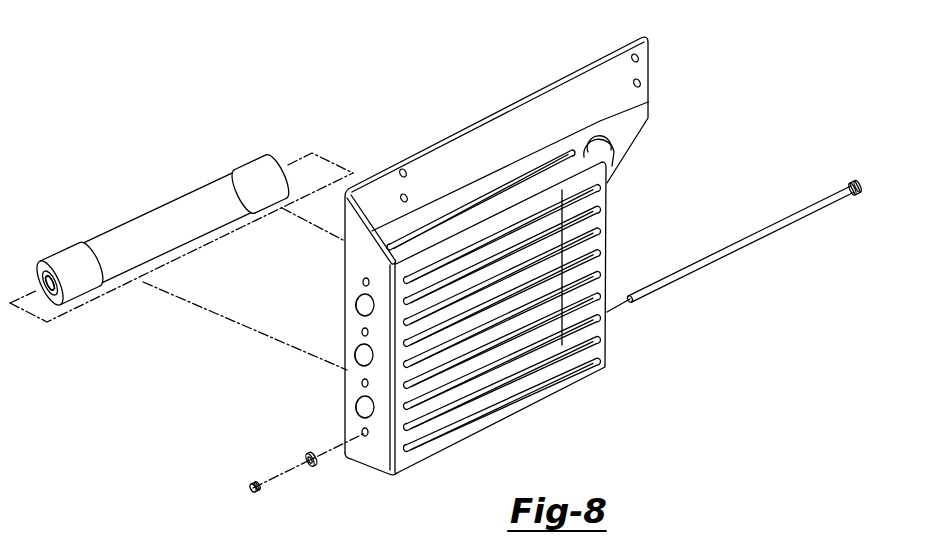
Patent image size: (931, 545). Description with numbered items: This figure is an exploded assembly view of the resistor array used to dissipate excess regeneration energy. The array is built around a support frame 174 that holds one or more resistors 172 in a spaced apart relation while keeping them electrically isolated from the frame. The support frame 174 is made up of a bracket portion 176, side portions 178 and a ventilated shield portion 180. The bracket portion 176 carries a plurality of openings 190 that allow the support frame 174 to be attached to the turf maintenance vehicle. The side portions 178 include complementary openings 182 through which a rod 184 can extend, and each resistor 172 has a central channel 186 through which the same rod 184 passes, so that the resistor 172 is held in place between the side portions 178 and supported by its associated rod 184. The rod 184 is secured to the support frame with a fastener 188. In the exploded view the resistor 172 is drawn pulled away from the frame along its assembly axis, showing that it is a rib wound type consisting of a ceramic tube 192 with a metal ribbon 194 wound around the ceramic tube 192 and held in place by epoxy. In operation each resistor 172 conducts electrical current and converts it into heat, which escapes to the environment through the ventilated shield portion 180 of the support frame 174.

The resistor 172 is at (157, 215).
The support frame 174 is at (678, 85).
The bracket portion 176 is at (567, 92).
The side portions 178 is at (370, 455).
The ventilated shield portion 180 is at (553, 390).
The complementary openings 182 is at (362, 332).
The rod 184 is at (727, 252).
The central channel 186 is at (48, 296).
The fastener 188 is at (238, 467).
The openings 190 is at (415, 175).
The ceramic tube 192 is at (65, 262).
The metal ribbon 194 is at (235, 176).